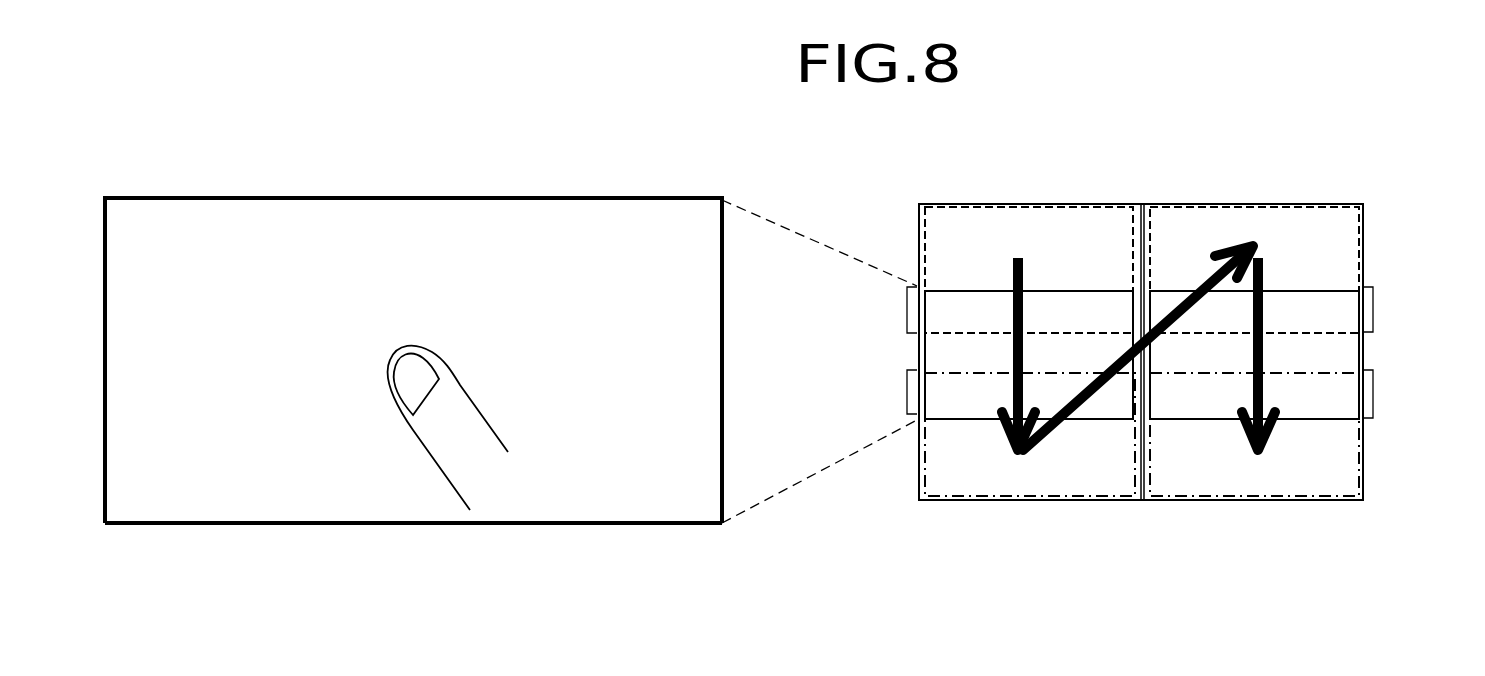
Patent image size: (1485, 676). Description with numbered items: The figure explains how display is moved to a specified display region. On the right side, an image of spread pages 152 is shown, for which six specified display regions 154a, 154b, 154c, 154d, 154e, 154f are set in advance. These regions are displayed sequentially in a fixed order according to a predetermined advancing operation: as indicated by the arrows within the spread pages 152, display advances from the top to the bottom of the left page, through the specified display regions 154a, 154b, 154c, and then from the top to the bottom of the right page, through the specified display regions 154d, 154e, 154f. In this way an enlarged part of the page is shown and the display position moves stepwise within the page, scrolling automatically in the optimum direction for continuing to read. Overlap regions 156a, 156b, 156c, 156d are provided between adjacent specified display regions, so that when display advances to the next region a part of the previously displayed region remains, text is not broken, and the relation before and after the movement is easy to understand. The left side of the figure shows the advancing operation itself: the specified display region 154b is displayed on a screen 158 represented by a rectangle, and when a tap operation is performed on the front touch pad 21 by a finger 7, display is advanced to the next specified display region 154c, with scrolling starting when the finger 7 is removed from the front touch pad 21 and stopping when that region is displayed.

The front touch pad 21 is at (553, 222).
The screen 158 is at (608, 523).
The finger 7 is at (488, 472).
The spread pages 152 is at (1205, 499).
The specified display region 154a is at (918, 220).
The specified display region 154b is at (918, 361).
The specified display region 154c is at (930, 500).
The specified display region 154d is at (1362, 235).
The specified display region 154e is at (1362, 350).
The specified display region 154f is at (1362, 450).
The overlap region 156a is at (907, 313).
The overlap region 156b is at (907, 393).
The overlap region 156c is at (1373, 309).
The overlap region 156d is at (1373, 394).